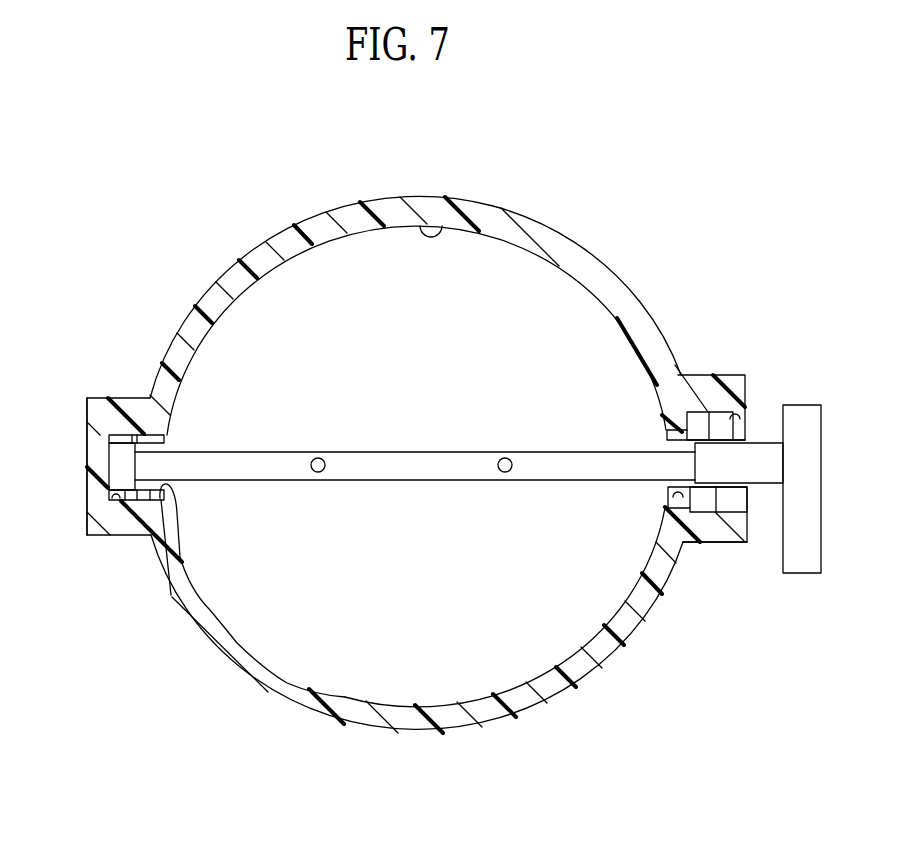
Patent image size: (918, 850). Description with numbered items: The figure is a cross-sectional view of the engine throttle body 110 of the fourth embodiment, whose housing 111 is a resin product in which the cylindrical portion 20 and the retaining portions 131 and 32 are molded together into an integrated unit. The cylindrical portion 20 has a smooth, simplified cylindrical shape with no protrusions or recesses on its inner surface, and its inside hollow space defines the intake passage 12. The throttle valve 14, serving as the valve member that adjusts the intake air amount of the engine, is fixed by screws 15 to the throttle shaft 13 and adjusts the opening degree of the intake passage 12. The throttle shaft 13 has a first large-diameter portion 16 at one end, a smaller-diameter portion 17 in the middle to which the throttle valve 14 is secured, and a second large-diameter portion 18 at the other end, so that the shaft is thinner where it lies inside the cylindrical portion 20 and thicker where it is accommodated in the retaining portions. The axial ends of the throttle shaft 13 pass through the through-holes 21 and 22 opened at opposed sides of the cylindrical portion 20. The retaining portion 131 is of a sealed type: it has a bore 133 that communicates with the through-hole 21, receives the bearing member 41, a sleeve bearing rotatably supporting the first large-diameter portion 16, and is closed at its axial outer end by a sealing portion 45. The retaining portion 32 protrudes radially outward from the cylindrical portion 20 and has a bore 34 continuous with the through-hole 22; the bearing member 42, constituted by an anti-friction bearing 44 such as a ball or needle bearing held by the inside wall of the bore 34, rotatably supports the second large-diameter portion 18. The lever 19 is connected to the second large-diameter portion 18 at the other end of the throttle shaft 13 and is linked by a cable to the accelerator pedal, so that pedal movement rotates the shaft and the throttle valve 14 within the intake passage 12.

The engine throttle body 110 is at (553, 208).
The housing 111 is at (645, 284).
The intake passage 12 is at (425, 226).
The throttle shaft 13 is at (240, 445).
The throttle valve 14 is at (348, 260).
The screws 15 is at (316, 458).
The first large-diameter portion 16 is at (135, 503).
The smaller-diameter portion 17 is at (432, 472).
The second large-diameter portion 18 is at (757, 470).
The lever 19 is at (800, 573).
The cylindrical portion 20 is at (645, 312).
The through-hole 21 is at (169, 597).
The through-hole 22 is at (687, 545).
The retaining portion 32 is at (705, 432).
The bore 34 is at (723, 418).
The bearing member 41 is at (102, 398).
The bearing member 42 is at (732, 514).
The anti-friction bearing 44 is at (738, 427).
The sealing portion 45 is at (86, 470).
The retaining portion 131 is at (131, 398).
The bore 133 is at (116, 503).